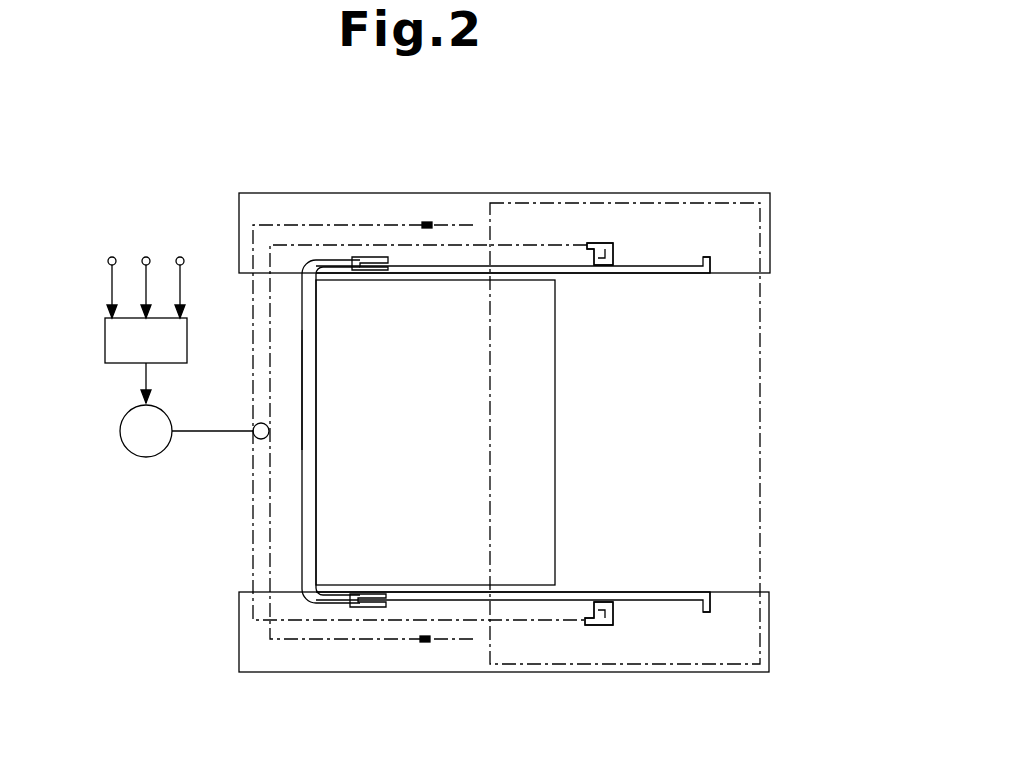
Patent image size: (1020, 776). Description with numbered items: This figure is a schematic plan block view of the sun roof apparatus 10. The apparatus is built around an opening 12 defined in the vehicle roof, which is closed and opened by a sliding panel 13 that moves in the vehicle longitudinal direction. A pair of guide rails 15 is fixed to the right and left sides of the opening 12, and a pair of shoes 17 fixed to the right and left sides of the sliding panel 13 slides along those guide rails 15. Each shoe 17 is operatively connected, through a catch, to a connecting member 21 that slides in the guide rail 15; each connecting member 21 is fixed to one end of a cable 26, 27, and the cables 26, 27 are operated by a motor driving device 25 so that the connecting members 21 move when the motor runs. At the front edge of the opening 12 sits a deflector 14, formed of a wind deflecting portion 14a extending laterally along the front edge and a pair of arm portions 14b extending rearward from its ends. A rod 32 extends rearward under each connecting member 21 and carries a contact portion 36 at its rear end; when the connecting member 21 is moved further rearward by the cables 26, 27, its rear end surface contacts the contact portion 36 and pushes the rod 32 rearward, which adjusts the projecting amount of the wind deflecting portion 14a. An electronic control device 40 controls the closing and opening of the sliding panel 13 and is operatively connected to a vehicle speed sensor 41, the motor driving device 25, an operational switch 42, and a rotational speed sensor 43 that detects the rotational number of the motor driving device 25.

The sun roof apparatus 10 is at (773, 178).
The opening 12 is at (555, 493).
The sliding panel 13 is at (688, 672).
The deflector 14 is at (318, 490).
The wind deflecting portion 14a is at (318, 386).
The arm portion 14b is at (344, 271).
The guide rail 15 is at (294, 202).
The shoe 17 is at (602, 266).
The connecting member 21 is at (600, 243).
The motor driving device 25 is at (122, 440).
The cable 26 is at (250, 527).
The cable 27 is at (268, 562).
The rod 32 is at (677, 273).
The contact portion 36 is at (698, 256).
The electronic control device 40 is at (187, 338).
The vehicle speed sensor 41 is at (111, 256).
The operational switch 42 is at (146, 256).
The rotational speed sensor 43 is at (181, 256).